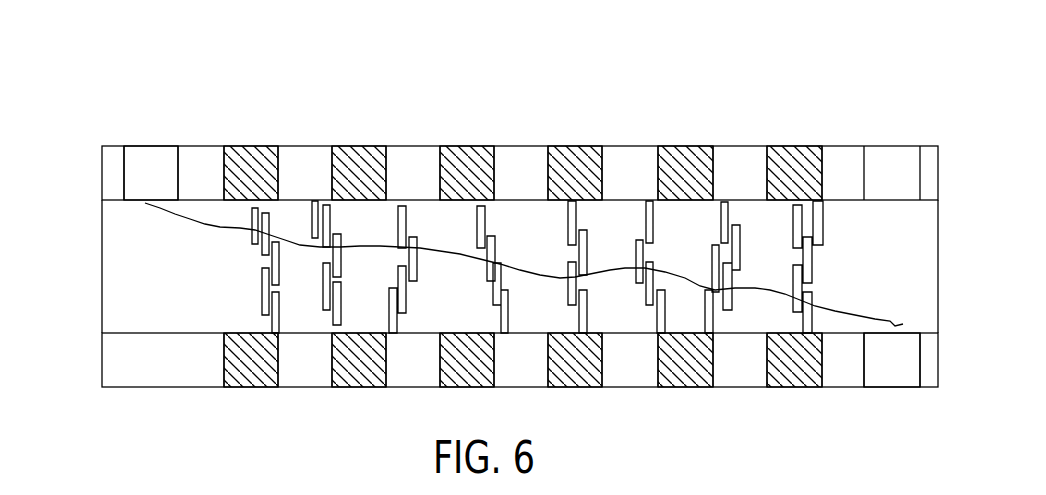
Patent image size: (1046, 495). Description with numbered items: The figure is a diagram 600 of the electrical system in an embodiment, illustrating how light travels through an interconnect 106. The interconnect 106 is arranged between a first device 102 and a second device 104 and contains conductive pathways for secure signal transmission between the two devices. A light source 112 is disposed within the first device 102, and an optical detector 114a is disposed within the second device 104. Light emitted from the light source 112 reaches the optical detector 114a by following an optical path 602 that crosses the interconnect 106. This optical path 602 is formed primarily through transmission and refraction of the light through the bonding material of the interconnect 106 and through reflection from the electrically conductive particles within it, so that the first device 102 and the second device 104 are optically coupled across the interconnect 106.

The diagram 600 is at (828, 82).
The first device 102 is at (932, 178).
The second device 104 is at (928, 359).
The interconnect 106 is at (76, 236).
The light source 112 is at (150, 157).
The optical detector 114a is at (888, 375).
The optical path 602 is at (503, 257).